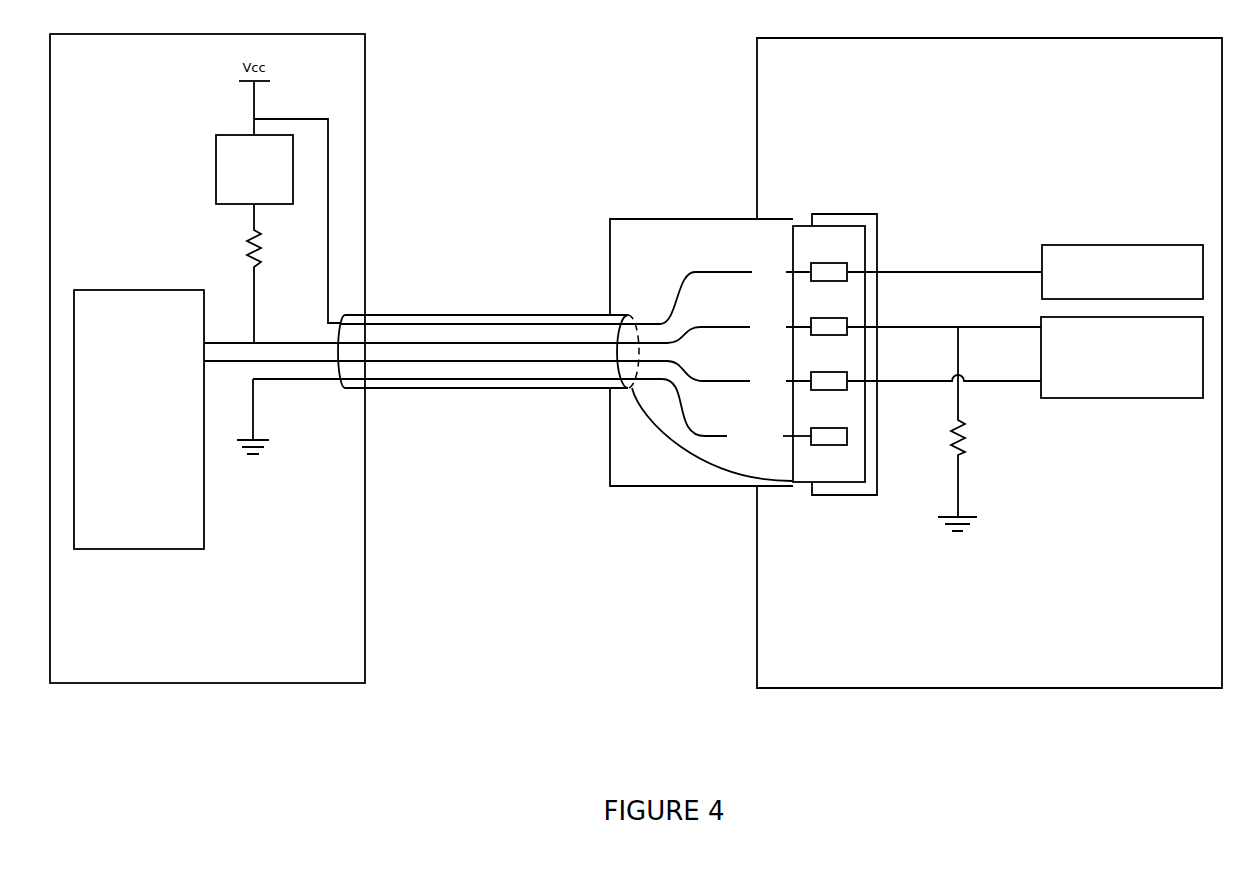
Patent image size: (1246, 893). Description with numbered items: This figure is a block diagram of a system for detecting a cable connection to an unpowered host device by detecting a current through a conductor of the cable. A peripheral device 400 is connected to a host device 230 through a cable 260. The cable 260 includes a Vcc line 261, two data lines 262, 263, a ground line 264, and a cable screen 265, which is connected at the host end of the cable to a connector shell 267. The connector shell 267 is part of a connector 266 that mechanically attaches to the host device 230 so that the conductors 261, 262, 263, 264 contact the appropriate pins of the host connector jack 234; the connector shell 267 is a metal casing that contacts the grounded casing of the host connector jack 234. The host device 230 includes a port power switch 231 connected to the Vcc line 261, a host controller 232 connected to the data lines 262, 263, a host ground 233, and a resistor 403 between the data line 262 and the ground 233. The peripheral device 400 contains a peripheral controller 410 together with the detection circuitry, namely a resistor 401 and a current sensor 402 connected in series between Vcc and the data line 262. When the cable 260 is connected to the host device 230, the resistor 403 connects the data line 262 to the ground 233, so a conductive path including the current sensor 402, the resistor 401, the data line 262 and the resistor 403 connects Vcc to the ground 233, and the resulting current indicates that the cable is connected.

The peripheral device 400 is at (274, 668).
The peripheral controller 410 is at (126, 540).
The current sensor 402 is at (241, 200).
The resistor 401 is at (226, 273).
The cable 260 is at (498, 182).
The cable screen 265 is at (530, 402).
The connector 266 is at (604, 500).
The connector shell 267 is at (803, 500).
The host connector jack 234 is at (849, 198).
The Vcc line 261 is at (899, 282).
The data line 262 is at (896, 335).
The data line 263 is at (896, 390).
The ground line 264 is at (789, 446).
The host device 230 is at (1147, 676).
The port power switch 231 is at (1109, 291).
The host controller 232 is at (1109, 377).
The resistor 403 is at (997, 422).
The host ground 233 is at (984, 531).